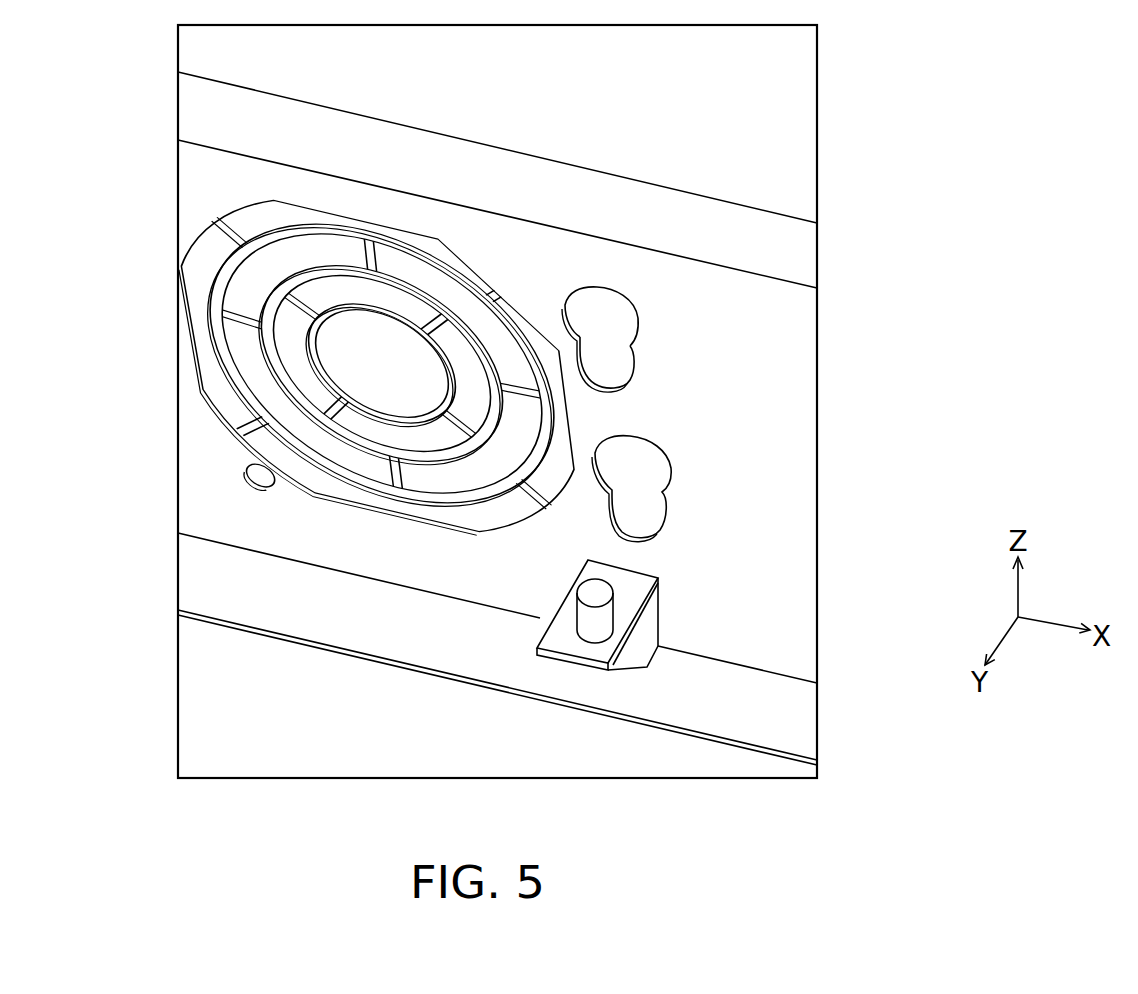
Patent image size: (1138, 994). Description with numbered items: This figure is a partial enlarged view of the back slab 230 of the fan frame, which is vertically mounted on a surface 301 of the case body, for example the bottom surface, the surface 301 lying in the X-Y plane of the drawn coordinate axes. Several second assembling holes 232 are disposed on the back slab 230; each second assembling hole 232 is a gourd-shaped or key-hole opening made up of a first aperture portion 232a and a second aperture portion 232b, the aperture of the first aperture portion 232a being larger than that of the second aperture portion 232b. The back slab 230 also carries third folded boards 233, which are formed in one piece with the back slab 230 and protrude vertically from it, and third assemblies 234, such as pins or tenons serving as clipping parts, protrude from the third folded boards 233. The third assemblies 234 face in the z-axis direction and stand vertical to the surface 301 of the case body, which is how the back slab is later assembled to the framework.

The back slab 230 is at (222, 462).
The second assembling hole 232 is at (771, 391).
The first aperture portion 232a is at (610, 312).
The second aperture portion 232b is at (612, 367).
The third folded board 233 is at (630, 592).
The third assembly 234 is at (595, 627).
The surface 301 is at (230, 673).